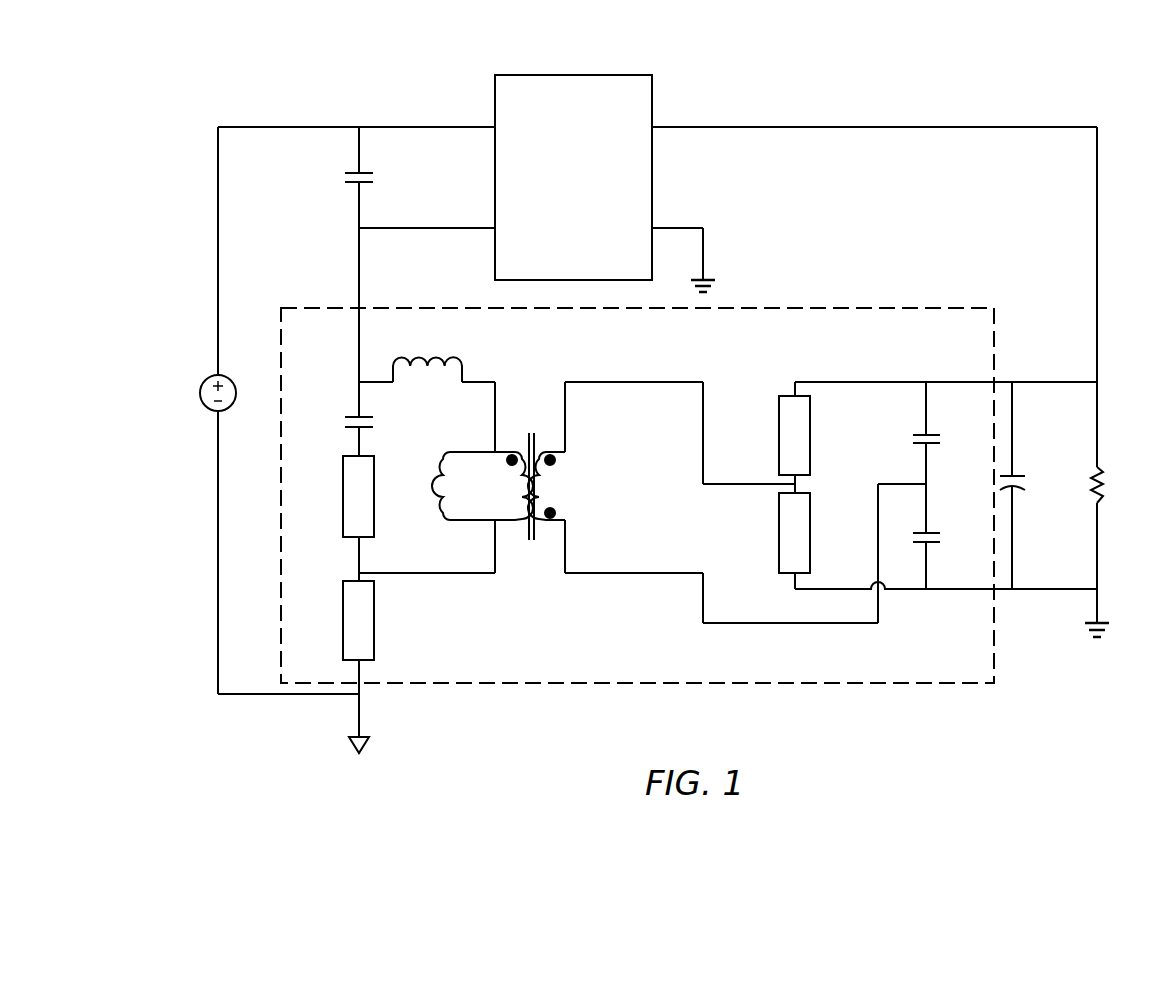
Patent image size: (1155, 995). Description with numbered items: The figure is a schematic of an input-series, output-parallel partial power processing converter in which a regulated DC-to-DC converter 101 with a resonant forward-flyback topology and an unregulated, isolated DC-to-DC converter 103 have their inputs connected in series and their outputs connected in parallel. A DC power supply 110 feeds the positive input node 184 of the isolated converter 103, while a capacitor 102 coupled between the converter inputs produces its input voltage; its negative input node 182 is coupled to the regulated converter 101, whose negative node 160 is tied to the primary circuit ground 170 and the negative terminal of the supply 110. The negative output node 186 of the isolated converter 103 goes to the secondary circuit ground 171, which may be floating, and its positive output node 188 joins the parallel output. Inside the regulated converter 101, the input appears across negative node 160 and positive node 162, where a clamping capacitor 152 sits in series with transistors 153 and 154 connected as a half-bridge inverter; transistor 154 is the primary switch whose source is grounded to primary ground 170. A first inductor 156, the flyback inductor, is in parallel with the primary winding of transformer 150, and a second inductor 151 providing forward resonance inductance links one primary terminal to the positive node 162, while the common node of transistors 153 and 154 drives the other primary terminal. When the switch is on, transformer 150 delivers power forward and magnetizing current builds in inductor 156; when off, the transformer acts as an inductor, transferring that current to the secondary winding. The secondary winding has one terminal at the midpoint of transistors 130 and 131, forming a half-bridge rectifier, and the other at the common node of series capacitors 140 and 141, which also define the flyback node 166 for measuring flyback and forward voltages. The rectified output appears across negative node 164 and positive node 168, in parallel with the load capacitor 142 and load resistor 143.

The regulated DC-to-DC converter 101 is at (630, 684).
The capacitor 102 is at (366, 184).
The isolated DC-to-DC converter 103 is at (620, 76).
The DC power supply 110 is at (206, 377).
The transistor 130 is at (812, 410).
The transistor 131 is at (812, 517).
The capacitor 140 is at (933, 436).
The capacitor 141 is at (933, 532).
The capacitor 142 is at (1018, 475).
The resistor 143 is at (1102, 470).
The transformer 150 is at (489, 505).
The second inductor 151 is at (462, 360).
The clamping capacitor 152 is at (367, 419).
The transistor 153 is at (375, 510).
The transistor 154 is at (375, 620).
The first inductor 156 is at (443, 455).
The negative node 160 is at (361, 670).
The positive node 162 is at (361, 326).
The negative node 164 is at (961, 590).
The flyback node 166 is at (884, 484).
The positive node 168 is at (960, 381).
The primary circuit ground 170 is at (367, 744).
The secondary circuit ground 171 is at (714, 281).
The negative input node 182 is at (450, 228).
The positive input node 184 is at (450, 127).
The negative output node 186 is at (655, 228).
The positive output node 188 is at (655, 127).